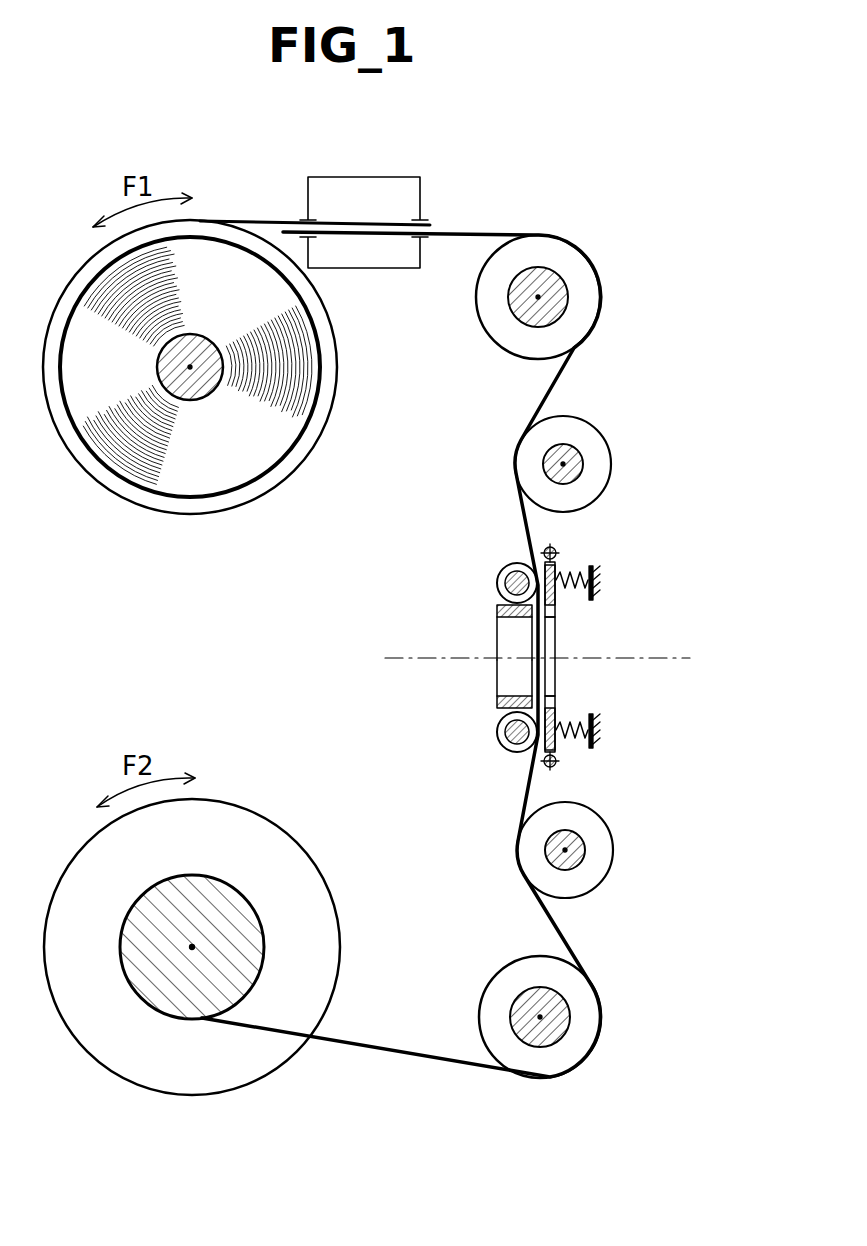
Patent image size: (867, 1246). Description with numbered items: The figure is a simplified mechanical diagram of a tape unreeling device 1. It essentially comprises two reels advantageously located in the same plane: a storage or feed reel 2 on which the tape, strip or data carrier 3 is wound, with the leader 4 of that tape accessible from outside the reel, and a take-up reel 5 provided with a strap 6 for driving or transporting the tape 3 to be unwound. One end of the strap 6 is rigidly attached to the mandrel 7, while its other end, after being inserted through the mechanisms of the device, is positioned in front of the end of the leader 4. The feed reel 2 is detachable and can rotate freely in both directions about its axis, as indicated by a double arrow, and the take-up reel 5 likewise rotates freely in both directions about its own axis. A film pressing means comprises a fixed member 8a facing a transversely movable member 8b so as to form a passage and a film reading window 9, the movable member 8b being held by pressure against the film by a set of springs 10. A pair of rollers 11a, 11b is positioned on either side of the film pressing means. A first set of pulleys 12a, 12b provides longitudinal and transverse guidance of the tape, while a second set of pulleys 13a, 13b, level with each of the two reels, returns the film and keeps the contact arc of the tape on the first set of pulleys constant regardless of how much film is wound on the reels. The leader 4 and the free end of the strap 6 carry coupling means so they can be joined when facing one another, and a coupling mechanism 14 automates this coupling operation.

The tape unreeling device 1 is at (372, 591).
The storage or feed reel 2 is at (335, 370).
The tape, strip or data carrier 3 is at (263, 482).
The leader 4 is at (283, 222).
The take-up reel 5 is at (336, 900).
The strap 6 is at (480, 232).
The mandrel 7 is at (205, 890).
The fixed member 8a is at (497, 700).
The transversely movable member 8b is at (558, 566).
The film reading window 9 is at (552, 665).
The springs 10 is at (564, 595).
The roller 11a is at (500, 580).
The roller 11b is at (502, 742).
The pulley of first set 12a is at (592, 440).
The pulley of first set 12b is at (595, 868).
The pulley of second set 13a is at (497, 327).
The pulley of second set 13b is at (510, 975).
The coupling mechanism 14 is at (378, 177).